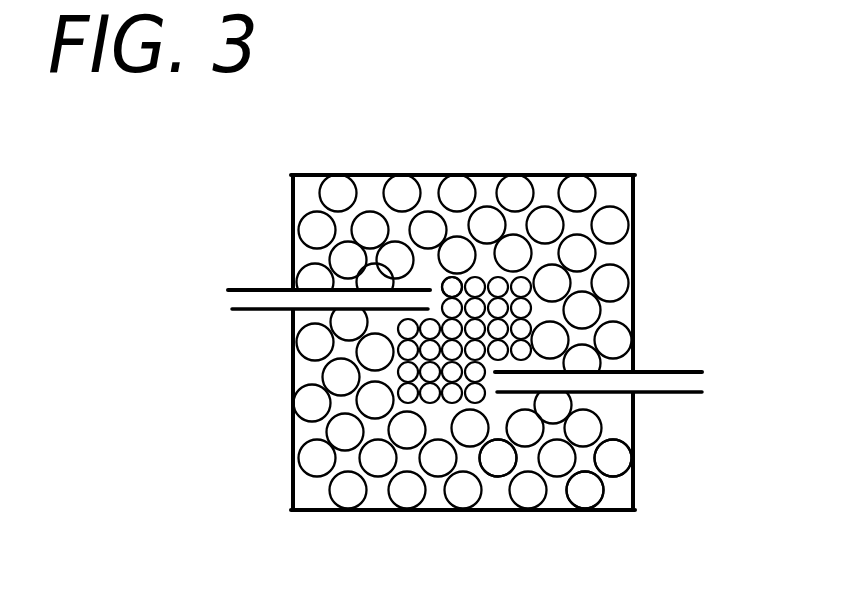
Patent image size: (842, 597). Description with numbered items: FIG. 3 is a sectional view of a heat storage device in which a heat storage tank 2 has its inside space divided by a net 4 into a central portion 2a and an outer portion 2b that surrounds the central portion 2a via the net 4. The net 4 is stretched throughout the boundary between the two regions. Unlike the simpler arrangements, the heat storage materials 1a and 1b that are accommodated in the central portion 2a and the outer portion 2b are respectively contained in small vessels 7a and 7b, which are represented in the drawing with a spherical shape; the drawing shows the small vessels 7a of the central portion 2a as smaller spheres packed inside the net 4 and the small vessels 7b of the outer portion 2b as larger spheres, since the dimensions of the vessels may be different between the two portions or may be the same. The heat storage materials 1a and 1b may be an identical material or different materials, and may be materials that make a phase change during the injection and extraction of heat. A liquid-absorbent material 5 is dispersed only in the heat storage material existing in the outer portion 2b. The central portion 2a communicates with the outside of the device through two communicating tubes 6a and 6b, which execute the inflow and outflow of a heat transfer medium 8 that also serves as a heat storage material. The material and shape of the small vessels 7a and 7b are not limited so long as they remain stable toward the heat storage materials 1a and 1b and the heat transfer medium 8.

The heat storage material 1a is at (522, 286).
The heat storage material 1b is at (580, 192).
The heat storage tank 2 is at (634, 297).
The central portion 2a is at (498, 399).
The outer portion 2b is at (617, 499).
The net 4 is at (428, 410).
The liquid-absorbent material 5 is at (315, 493).
The communicating tube 6a is at (250, 290).
The communicating tube 6b is at (672, 372).
The small vessel 7a is at (431, 280).
The small vessel 7b is at (633, 485).
The heat transfer medium 8 is at (242, 297).